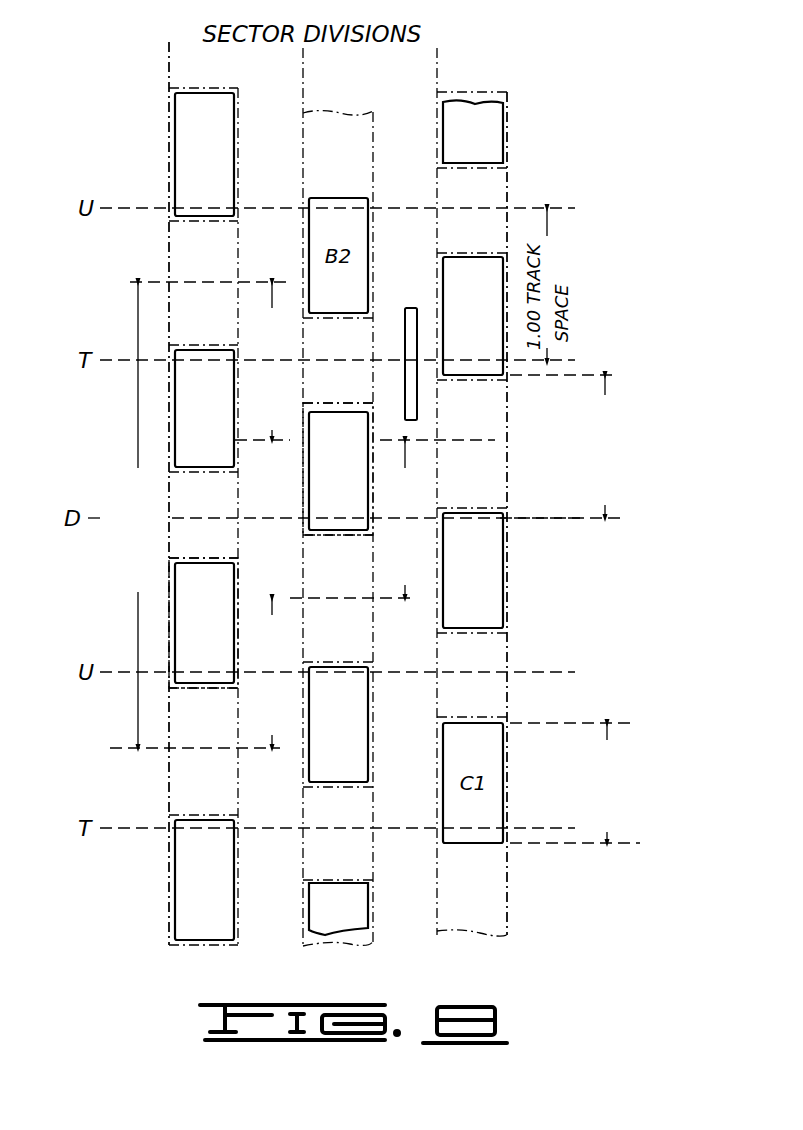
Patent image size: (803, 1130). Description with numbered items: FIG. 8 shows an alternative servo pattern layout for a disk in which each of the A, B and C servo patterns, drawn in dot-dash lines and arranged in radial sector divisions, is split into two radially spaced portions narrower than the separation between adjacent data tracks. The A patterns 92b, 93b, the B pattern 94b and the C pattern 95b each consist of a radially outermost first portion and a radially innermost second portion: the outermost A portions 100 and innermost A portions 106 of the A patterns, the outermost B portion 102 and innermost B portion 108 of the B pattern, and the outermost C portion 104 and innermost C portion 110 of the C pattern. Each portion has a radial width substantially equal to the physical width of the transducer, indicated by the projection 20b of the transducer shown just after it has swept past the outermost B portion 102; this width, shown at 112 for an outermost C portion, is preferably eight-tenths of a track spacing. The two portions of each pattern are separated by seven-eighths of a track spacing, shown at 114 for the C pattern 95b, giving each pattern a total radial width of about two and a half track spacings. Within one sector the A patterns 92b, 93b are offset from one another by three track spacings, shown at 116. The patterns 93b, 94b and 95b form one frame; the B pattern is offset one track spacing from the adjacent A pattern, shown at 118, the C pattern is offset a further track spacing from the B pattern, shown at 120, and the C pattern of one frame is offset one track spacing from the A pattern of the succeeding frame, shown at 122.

The projection of transducer 20b is at (406, 310).
The A pattern 92b is at (168, 126).
The A pattern 93b is at (168, 640).
The B pattern 94b is at (304, 500).
The C pattern 95b is at (508, 448).
The A1 portion 100 is at (218, 122).
The B1 portion 102 is at (318, 510).
The C1 portion 104 is at (467, 268).
The A2 portion 106 is at (186, 438).
The B2 portion 108 is at (328, 762).
The C2 portion 110 is at (485, 608).
The portion width 112 is at (609, 745).
The portion separation 114 is at (607, 400).
The A pattern offset 116 is at (137, 318).
The B pattern offset 118 is at (274, 734).
The C pattern offset 120 is at (410, 464).
The inter-frame offset 122 is at (270, 304).